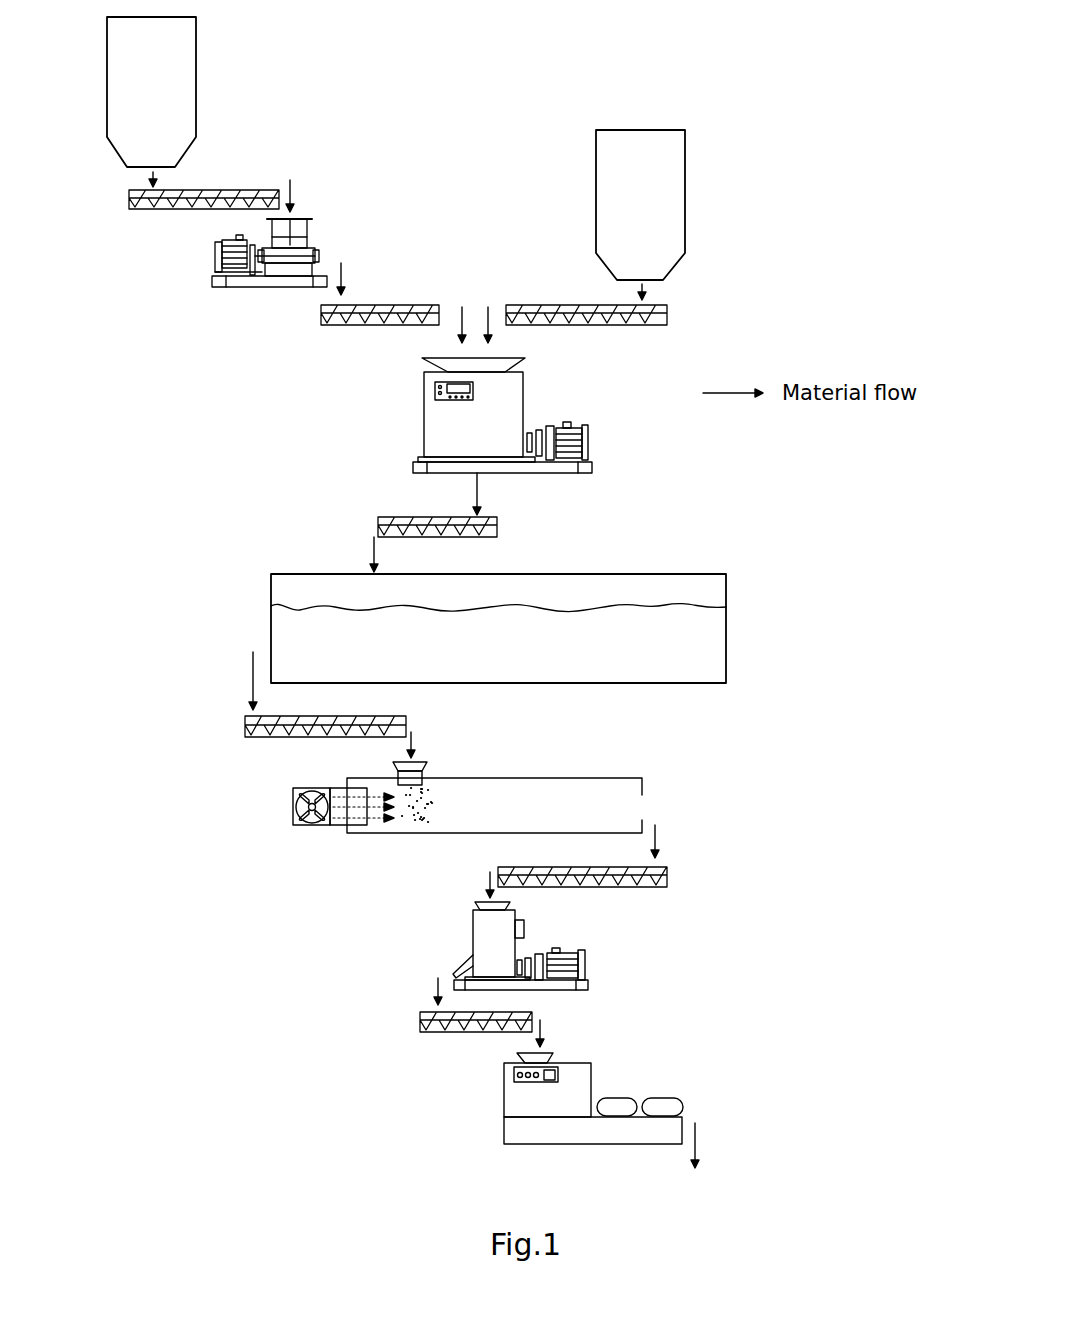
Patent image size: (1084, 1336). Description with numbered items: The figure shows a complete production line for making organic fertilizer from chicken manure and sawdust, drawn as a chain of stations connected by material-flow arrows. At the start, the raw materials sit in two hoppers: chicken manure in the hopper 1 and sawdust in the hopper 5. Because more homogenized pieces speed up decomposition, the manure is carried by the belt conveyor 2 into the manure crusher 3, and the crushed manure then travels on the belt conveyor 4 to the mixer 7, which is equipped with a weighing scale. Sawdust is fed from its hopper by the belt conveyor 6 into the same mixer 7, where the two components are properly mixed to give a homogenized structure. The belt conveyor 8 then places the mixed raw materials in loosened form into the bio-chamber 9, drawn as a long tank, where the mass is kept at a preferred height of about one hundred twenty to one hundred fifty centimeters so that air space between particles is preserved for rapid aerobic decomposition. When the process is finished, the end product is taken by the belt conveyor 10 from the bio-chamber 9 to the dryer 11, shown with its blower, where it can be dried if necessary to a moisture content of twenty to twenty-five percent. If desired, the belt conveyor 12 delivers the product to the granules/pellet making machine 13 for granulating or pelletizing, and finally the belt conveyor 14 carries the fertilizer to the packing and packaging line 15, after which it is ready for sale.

The hopper 1 is at (115, 70).
The belt conveyor 2 is at (129, 197).
The manure crusher 3 is at (213, 254).
The belt conveyor 4 is at (322, 310).
The hopper 5 is at (672, 176).
The belt conveyor 6 is at (668, 312).
The mixer 7 is at (430, 420).
The belt conveyor 8 is at (490, 524).
The bio-chamber 9 is at (278, 598).
The belt conveyor 10 is at (248, 722).
The dryer 11 is at (508, 783).
The belt conveyor 12 is at (665, 875).
The granules/pellet making machine 13 is at (476, 930).
The belt conveyor 14 is at (422, 1018).
The packing and packaging line 15 is at (514, 1096).